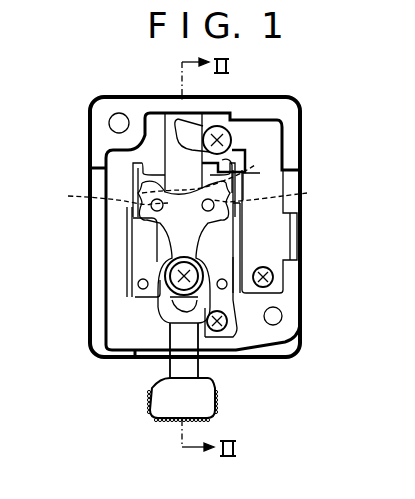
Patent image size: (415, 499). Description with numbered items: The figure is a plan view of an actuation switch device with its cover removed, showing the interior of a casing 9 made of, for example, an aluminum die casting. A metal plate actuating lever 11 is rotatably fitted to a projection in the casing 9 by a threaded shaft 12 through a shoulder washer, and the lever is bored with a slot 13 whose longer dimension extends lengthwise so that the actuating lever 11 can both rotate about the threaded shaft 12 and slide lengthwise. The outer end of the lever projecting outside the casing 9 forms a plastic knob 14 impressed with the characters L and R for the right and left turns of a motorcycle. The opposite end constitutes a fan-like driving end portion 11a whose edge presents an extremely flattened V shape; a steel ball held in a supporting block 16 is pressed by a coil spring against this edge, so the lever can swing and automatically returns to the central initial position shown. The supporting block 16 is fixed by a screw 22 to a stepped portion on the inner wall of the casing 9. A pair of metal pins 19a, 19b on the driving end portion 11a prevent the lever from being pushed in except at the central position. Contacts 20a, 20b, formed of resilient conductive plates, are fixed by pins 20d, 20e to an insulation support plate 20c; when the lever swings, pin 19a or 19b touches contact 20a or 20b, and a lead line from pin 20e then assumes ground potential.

The casing 9 is at (292, 124).
The actuating lever 11 is at (175, 302).
The driving end portion 11a is at (233, 167).
The threaded shaft 12 is at (175, 272).
The slot 13 is at (170, 300).
The knob 14 is at (220, 405).
The supporting block 16 is at (177, 167).
The metal pin 19a is at (99, 196).
The metal pin 19b is at (244, 186).
The contact 20a is at (133, 246).
The contact 20b is at (233, 220).
The insulation support plate 20c is at (227, 258).
The pin 20d is at (138, 283).
The pin 20e is at (248, 297).
The screw 22 is at (198, 122).